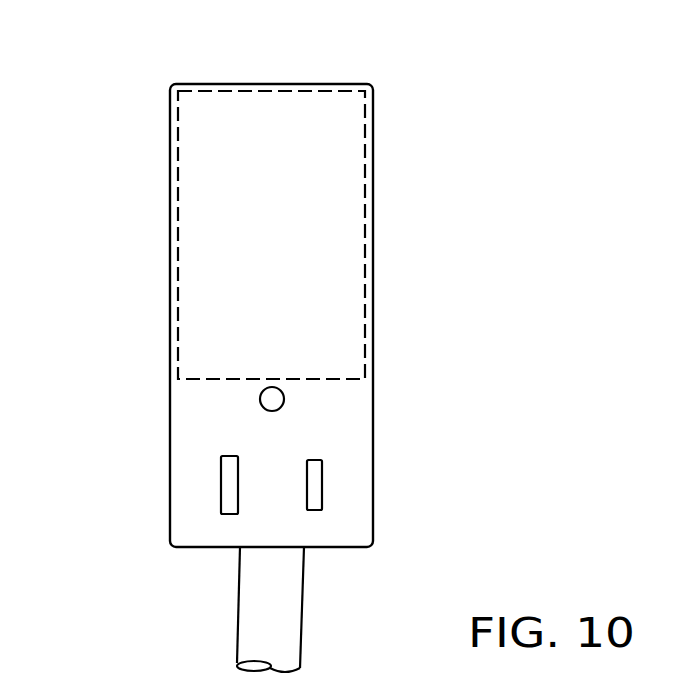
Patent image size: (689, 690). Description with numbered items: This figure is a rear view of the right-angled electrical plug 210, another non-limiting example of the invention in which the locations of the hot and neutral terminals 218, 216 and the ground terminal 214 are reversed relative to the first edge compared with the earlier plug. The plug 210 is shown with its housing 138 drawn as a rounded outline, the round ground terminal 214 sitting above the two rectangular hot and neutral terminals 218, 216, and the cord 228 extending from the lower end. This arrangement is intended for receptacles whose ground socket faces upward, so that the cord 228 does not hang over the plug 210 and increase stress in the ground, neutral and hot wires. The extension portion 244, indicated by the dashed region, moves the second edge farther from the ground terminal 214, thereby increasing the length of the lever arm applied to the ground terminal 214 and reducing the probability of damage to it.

The connector housing 138 is at (343, 84).
The right-angled electrical plug 210 is at (157, 161).
The extension portion 244 is at (350, 182).
The ground terminal 214 is at (262, 391).
The hot terminal 218 is at (230, 460).
The neutral terminal 216 is at (313, 466).
The cord 228 is at (297, 592).